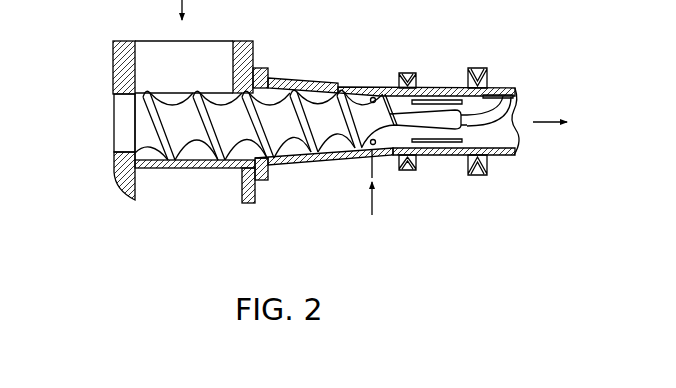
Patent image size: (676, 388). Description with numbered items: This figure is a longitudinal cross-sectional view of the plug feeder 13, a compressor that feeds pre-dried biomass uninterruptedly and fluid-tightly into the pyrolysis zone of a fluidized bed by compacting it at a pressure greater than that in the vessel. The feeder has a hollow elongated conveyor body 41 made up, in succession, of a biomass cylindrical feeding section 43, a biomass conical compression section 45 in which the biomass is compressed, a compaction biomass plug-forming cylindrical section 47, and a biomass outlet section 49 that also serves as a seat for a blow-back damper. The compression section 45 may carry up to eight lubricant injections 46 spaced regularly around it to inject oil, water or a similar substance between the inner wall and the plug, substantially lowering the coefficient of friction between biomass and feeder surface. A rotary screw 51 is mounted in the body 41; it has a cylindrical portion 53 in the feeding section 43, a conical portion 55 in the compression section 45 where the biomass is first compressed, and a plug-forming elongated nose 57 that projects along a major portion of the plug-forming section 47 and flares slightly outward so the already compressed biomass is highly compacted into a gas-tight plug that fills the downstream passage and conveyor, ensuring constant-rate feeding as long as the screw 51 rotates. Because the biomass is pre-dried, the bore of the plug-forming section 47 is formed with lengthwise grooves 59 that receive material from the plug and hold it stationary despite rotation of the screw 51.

The plug feeder 13 is at (335, 62).
The hollow elongated conveyor body 41 is at (282, 77).
The biomass cylindrical feeding section 43 is at (172, 170).
The biomass conical compression section 45 is at (327, 162).
The lubricant injections 46 is at (376, 173).
The compaction biomass plug-forming cylindrical section 47 is at (441, 159).
The biomass outlet section 49 is at (505, 153).
The rotary screw 51 is at (110, 140).
The cylindrical portion 53 is at (224, 113).
The conical portion 55 is at (357, 88).
The plug-forming elongated nose 57 is at (423, 115).
The lengthwise grooves 59 is at (495, 96).